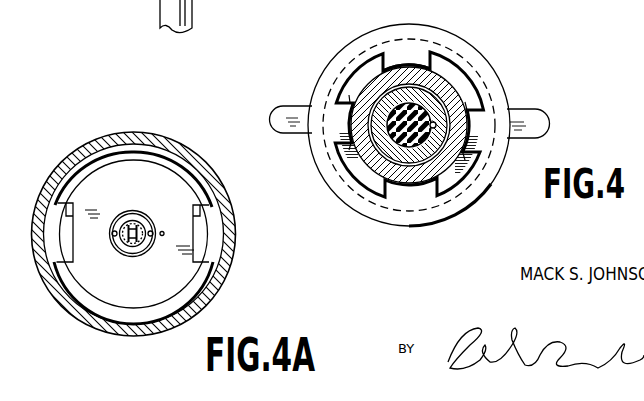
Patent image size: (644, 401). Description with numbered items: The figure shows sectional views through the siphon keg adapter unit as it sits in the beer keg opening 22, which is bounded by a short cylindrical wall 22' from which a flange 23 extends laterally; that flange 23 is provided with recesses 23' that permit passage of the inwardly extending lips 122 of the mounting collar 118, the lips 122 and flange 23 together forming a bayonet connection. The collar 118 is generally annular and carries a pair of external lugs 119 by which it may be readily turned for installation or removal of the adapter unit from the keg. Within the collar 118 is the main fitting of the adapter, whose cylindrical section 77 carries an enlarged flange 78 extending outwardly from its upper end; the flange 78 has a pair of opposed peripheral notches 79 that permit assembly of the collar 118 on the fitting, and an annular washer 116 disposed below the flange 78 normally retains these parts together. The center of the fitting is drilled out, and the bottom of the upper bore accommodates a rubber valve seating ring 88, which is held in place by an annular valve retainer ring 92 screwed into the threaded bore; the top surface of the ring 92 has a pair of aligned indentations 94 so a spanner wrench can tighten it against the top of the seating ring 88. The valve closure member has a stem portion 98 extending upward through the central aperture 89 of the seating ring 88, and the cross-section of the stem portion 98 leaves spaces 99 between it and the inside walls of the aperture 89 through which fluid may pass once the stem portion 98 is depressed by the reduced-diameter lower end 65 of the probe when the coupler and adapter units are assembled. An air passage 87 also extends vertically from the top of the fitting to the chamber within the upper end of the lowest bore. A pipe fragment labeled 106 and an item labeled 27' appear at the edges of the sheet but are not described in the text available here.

In FIG. 4A, the enlarged flange 78 is at (175, 183).
In FIG. 4A, the peripheral notches 79 is at (200, 217).
In FIG. 4A, the annular washer 116 is at (200, 237).
In FIG. 4, the annular washer 116 is at (400, 55).
In FIG. 4A, the mounting collar 118 is at (232, 303).
In FIG. 4, the mounting collar 118 is at (425, 237).
In FIG. 4A, the aligned indentations 94 is at (115, 230).
In FIG. 4A, the spaces 99 is at (135, 225).
In FIG. 4, the spaces 99 is at (479, 106).
In FIG. 4A, the air passage 87 is at (164, 232).
In FIG. 4, the air passage 87 is at (437, 126).
In FIG. 4A, the lower end of the probe 65 is at (127, 241).
In FIG. 4A, the central aperture 89 is at (132, 247).
In FIG. 4A, the valve retainer ring 92 is at (137, 242).
In FIG. 4A, the stem portion 98 is at (140, 236).
In FIG. 4, the flange 23 is at (409, 104).
In FIG. 4, the recesses 23' is at (408, 129).
In FIG. 4, the cylindrical section 77 is at (418, 98).
In FIG. 4, the short cylindrical wall 22' is at (438, 96).
In FIG. 4, the beer keg opening 22 is at (453, 103).
In FIG. 4, the valve seating ring 88 is at (428, 158).
In FIG. 4, the inwardly extending lips 122 is at (348, 175).
In FIG. 4, the external lugs 119 is at (287, 112).
In FIG. 4, the pipe 106 is at (192, 7).
In FIG. 4, the arm 27' is at (632, 7).